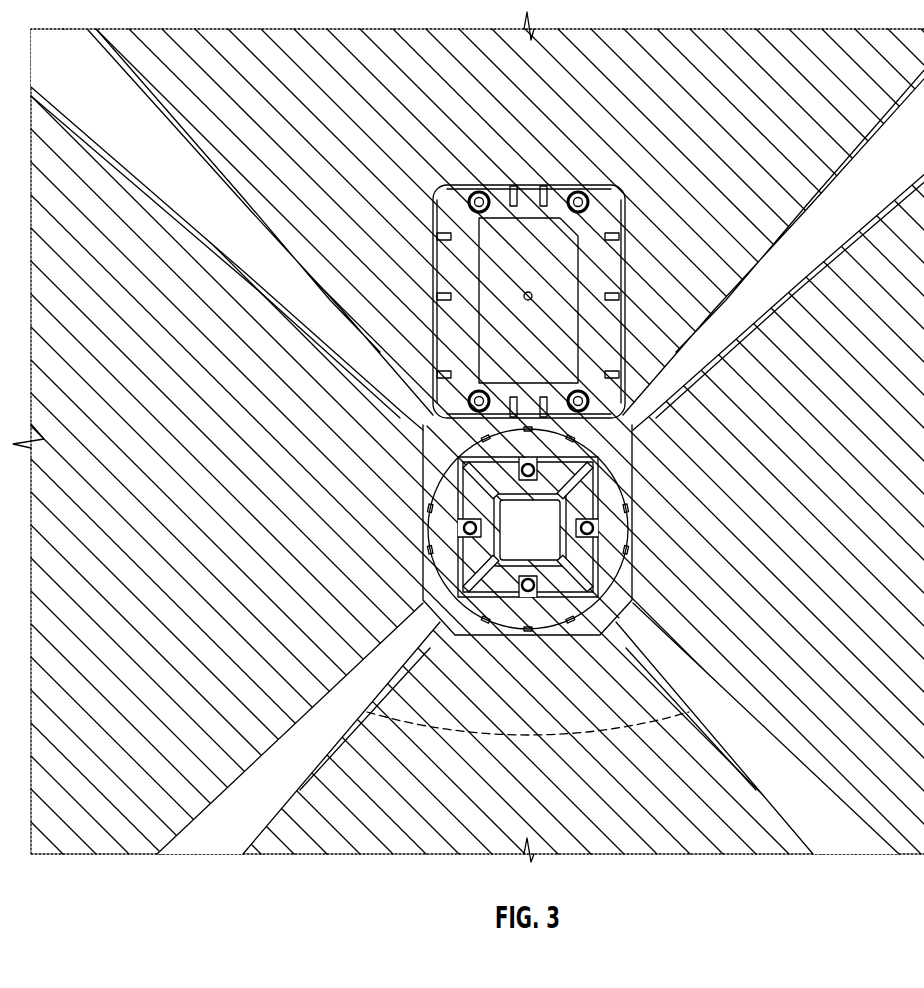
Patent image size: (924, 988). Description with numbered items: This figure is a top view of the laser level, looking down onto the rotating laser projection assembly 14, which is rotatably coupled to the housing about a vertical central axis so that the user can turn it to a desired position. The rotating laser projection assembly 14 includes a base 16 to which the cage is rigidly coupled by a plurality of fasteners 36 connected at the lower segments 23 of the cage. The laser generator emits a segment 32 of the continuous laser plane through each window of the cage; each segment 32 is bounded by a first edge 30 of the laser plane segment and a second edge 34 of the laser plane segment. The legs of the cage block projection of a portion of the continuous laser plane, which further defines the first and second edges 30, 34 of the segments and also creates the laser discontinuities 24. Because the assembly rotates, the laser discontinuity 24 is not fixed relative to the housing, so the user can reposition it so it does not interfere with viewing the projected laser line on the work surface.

The rotating laser projection assembly 14 is at (675, 517).
The base 16 is at (615, 483).
The lower segments 23 is at (468, 505).
The laser discontinuity 24 is at (705, 703).
The first edge of the laser plane segment 30 is at (707, 737).
The segment of the continuous laser plane 32 is at (533, 728).
The second edge of the laser plane segment 34 is at (343, 737).
The fasteners 36 is at (472, 528).